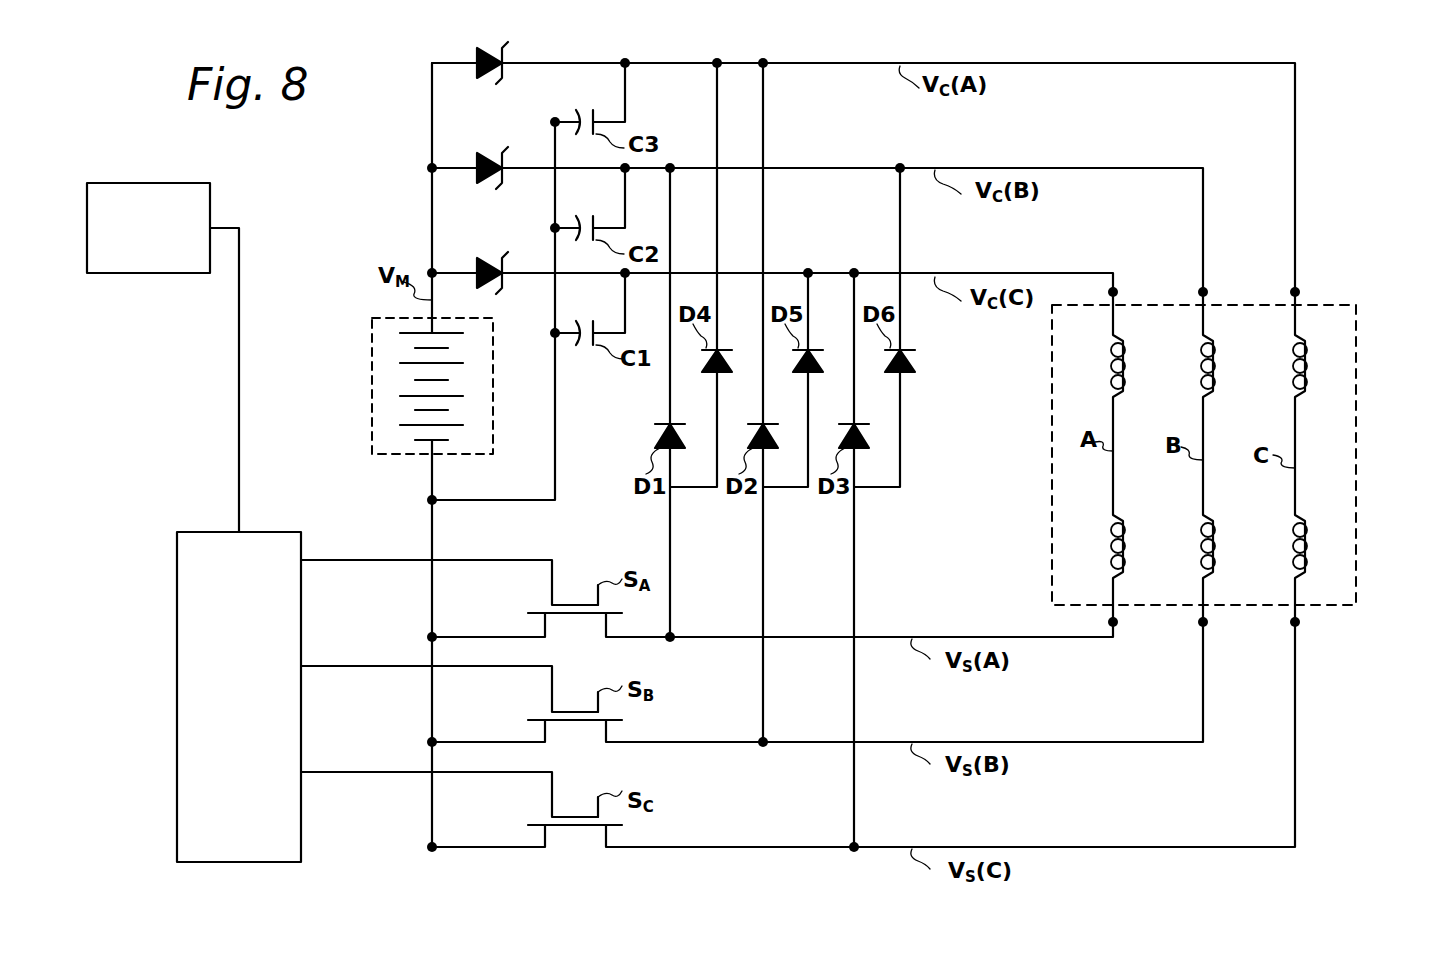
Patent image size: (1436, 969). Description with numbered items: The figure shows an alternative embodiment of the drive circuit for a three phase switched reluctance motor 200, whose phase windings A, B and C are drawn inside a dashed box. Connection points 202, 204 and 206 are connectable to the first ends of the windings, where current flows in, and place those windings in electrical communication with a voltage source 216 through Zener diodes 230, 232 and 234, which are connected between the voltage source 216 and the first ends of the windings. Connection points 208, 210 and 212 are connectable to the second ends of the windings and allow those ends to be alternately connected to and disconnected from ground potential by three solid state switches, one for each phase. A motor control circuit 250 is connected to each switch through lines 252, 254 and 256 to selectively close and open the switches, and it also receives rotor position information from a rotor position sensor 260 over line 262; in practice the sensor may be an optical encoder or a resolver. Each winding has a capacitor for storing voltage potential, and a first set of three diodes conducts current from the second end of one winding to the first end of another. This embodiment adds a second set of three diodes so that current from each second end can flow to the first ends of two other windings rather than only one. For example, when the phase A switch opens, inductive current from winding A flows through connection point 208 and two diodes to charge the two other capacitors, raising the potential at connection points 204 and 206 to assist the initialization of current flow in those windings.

The three phase switched reluctance motor 200 is at (1334, 605).
The connection point 202 is at (1115, 290).
The connection point 204 is at (1205, 290).
The connection point 206 is at (1297, 290).
The connection point 208 is at (1118, 625).
The connection point 210 is at (1208, 625).
The connection point 212 is at (1300, 625).
The voltage source 216 is at (372, 360).
The Zener diode 230 is at (506, 260).
The Zener diode 232 is at (481, 155).
The Zener diode 234 is at (478, 52).
The motor control circuit 250 is at (205, 532).
The line 252 is at (395, 560).
The line 254 is at (400, 666).
The line 256 is at (402, 772).
The rotor position sensor 260 is at (210, 193).
The line 262 is at (239, 305).